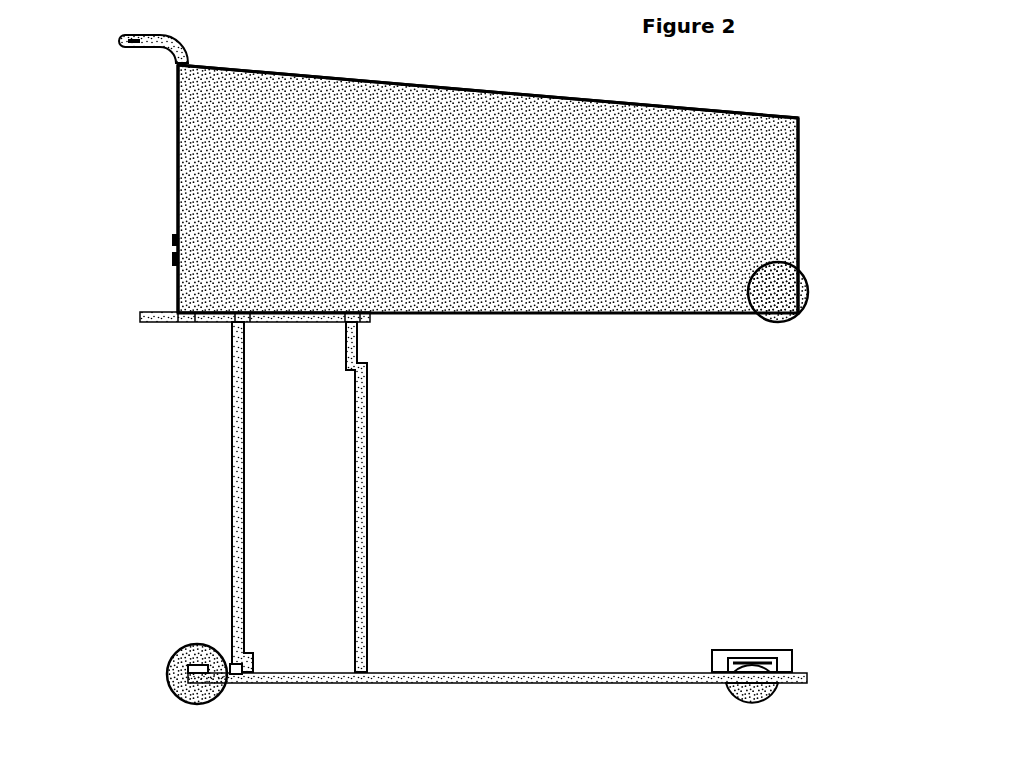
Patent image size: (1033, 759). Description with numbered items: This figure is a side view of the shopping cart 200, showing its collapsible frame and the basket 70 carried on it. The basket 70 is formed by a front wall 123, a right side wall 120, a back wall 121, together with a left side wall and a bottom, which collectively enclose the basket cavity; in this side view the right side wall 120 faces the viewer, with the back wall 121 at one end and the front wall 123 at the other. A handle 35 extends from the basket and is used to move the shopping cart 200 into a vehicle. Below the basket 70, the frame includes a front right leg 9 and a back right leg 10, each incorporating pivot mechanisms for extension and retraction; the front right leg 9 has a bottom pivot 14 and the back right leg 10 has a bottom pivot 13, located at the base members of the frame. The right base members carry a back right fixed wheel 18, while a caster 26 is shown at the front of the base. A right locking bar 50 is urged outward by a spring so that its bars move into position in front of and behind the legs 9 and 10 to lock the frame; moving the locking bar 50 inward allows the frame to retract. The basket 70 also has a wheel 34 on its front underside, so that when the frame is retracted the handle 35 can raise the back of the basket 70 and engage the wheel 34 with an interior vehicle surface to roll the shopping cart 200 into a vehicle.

The shopping cart 200 is at (266, 43).
The basket 70 is at (380, 58).
The handle 35 is at (150, 54).
The back wall 121 is at (157, 176).
The right side wall 120 is at (485, 189).
The front wall 123 is at (820, 147).
The wheel 34 is at (783, 300).
The right locking bar 50 is at (175, 344).
The back right leg 10 is at (245, 571).
The front right leg 9 is at (375, 535).
The back right fixed wheel 18 is at (165, 673).
The bottom pivot 13 is at (252, 677).
The bottom pivot 14 is at (366, 672).
The caster 26 is at (757, 640).